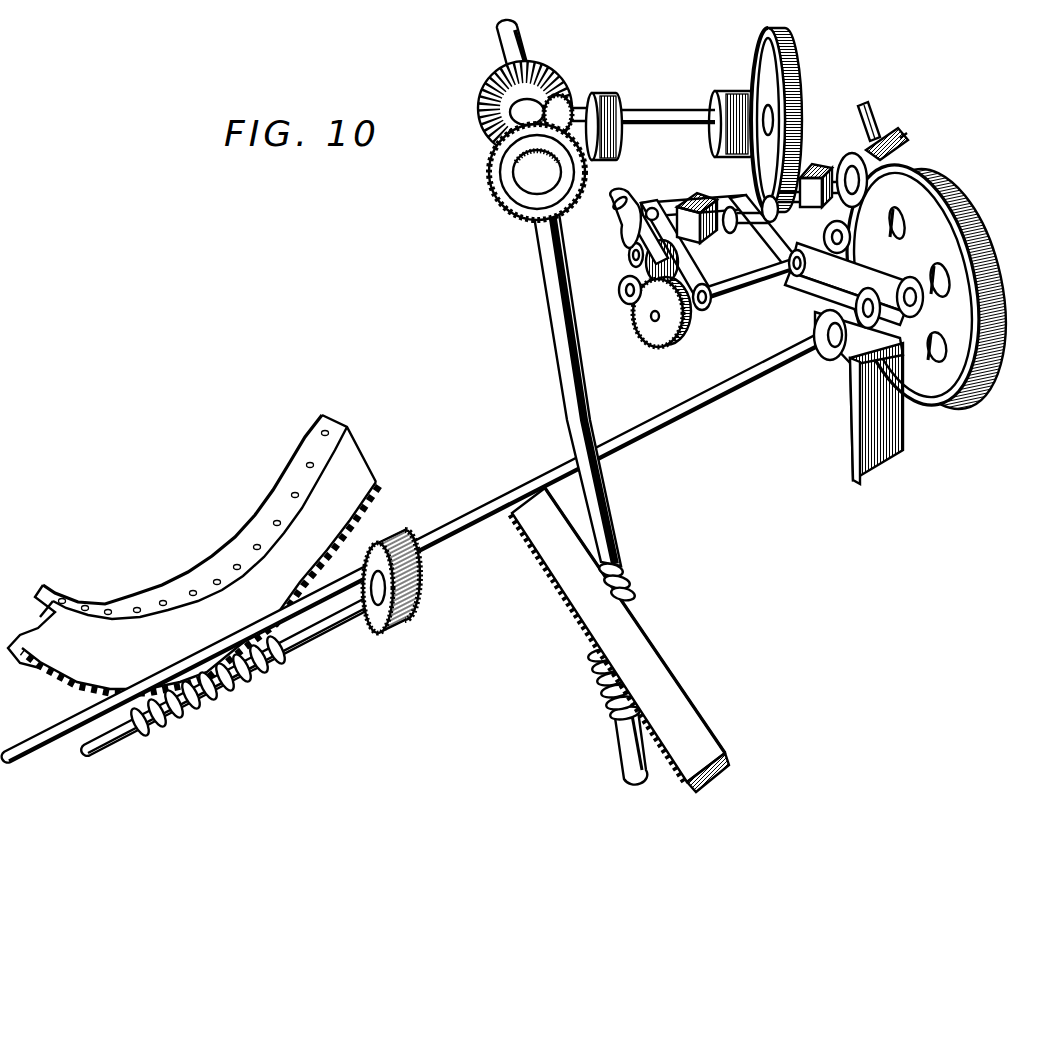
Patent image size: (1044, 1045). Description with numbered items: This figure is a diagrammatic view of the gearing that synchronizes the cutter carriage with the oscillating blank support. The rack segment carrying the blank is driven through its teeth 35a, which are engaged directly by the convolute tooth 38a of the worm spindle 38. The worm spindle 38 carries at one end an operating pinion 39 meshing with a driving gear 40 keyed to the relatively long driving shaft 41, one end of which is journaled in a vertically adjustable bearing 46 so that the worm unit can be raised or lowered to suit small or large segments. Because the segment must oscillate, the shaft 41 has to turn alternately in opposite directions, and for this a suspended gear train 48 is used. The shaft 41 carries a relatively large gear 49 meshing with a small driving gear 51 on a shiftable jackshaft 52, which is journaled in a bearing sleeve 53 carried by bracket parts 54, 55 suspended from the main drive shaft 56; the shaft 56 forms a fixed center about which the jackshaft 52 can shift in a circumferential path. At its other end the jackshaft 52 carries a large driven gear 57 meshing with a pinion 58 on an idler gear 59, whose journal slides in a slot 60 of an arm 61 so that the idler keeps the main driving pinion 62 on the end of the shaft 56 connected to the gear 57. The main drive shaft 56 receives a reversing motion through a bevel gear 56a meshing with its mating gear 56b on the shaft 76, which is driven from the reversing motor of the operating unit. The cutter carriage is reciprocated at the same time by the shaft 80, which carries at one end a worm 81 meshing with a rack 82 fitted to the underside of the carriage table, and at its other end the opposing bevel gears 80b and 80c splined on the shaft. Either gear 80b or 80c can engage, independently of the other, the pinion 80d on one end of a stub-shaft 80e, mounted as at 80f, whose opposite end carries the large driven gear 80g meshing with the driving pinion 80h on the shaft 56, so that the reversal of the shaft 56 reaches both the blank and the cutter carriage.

The teeth 35a is at (277, 646).
The worm gear spindle 38 is at (333, 626).
The convolute tooth 38a is at (243, 678).
The operating pinion 39 is at (393, 622).
The driving gear 40 is at (380, 540).
The driving shaft 41 is at (512, 503).
The vertically adjustable bearing 46 is at (867, 450).
The suspended gear train 48 is at (721, 326).
The relatively large gear 49 is at (947, 377).
The driving gear 51 is at (842, 247).
The jackshaft 52 is at (668, 292).
The bearing sleeve 53 is at (752, 285).
The bracket part 54 is at (699, 257).
The bracket part 55 is at (767, 236).
The main drive shaft 56 is at (855, 207).
The bevel gear 56a is at (856, 158).
The mating gear 56b is at (905, 138).
The driven gear 57 is at (652, 347).
The pinion 58 is at (620, 300).
The idler gear 59 is at (628, 271).
The slot 60 is at (652, 319).
The arm 61 is at (620, 249).
The main driving pinion 62 is at (654, 207).
The shaft 76 is at (873, 117).
The shaft 80 is at (560, 341).
The bevel gear 80b is at (477, 97).
The bevel gear 80c is at (505, 186).
The pinion 80d is at (560, 92).
The stub-shaft 80e is at (672, 111).
The mounting 80f is at (613, 139).
The driven gear 80g is at (795, 69).
The driving pinion 80h is at (766, 200).
The worm 81 is at (630, 575).
The rack 82 is at (640, 653).